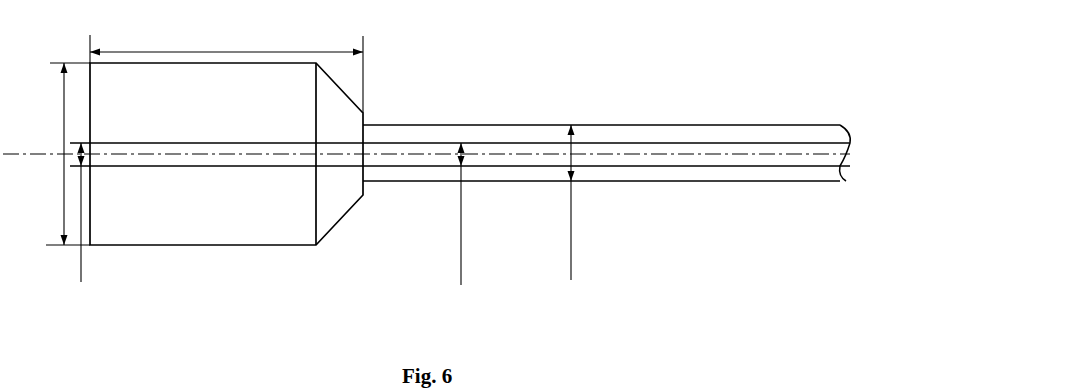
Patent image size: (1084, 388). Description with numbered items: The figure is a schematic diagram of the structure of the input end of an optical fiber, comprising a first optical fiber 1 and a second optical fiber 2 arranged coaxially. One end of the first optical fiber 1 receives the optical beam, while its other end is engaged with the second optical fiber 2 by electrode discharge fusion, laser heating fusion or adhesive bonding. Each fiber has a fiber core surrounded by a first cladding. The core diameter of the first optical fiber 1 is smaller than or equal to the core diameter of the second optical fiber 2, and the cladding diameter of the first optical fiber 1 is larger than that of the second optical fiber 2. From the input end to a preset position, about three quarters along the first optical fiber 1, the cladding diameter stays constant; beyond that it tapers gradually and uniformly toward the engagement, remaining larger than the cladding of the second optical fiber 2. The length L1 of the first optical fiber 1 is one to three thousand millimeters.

The first optical fiber 1 is at (185, 245).
The second optical fiber 2 is at (652, 181).
The length of the first optical fiber L1 is at (226, 67).